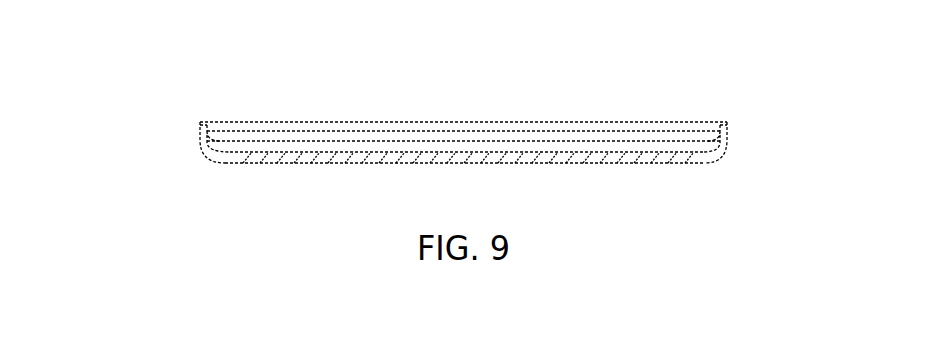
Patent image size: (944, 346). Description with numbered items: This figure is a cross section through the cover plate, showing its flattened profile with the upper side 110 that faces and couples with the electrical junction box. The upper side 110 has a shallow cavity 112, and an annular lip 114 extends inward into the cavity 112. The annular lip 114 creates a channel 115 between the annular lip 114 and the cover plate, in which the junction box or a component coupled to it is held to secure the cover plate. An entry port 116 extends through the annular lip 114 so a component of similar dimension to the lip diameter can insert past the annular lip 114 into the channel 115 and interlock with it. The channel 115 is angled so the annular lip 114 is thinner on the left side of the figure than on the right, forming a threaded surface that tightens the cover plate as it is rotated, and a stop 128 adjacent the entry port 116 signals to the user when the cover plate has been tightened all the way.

The upper side 110 is at (445, 152).
The cavity 112 is at (612, 142).
The annular lip 114 is at (247, 122).
The channel 115 is at (220, 135).
The entry port 116 is at (705, 128).
The stop 128 is at (703, 137).